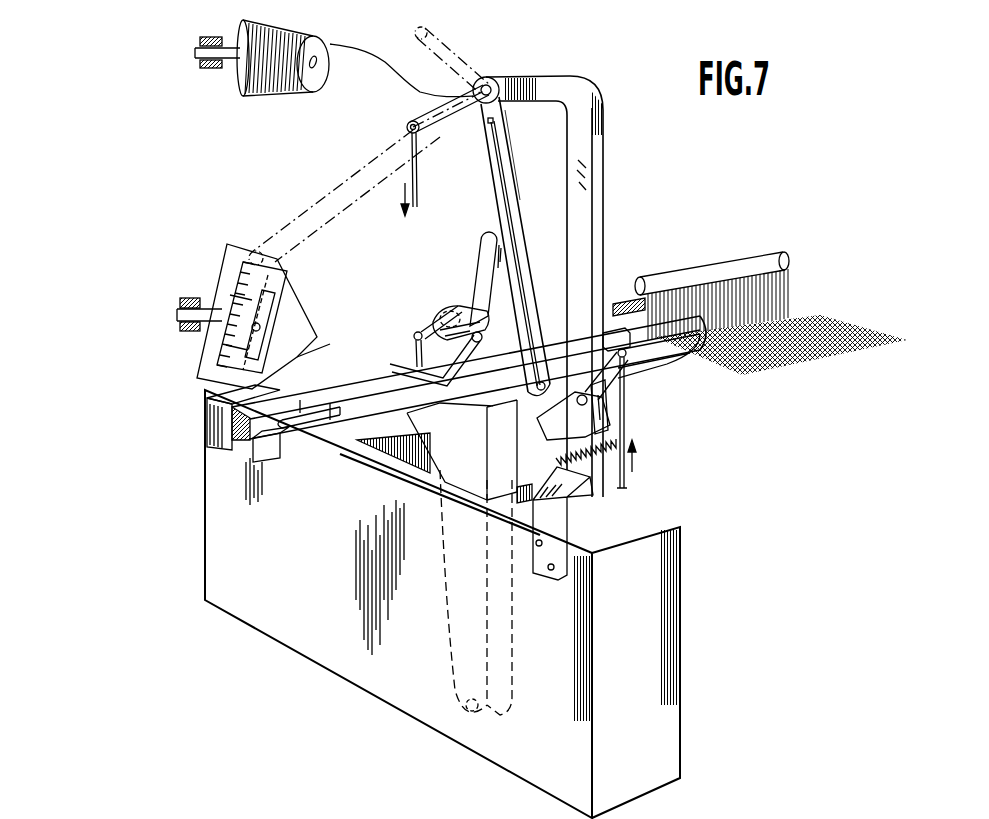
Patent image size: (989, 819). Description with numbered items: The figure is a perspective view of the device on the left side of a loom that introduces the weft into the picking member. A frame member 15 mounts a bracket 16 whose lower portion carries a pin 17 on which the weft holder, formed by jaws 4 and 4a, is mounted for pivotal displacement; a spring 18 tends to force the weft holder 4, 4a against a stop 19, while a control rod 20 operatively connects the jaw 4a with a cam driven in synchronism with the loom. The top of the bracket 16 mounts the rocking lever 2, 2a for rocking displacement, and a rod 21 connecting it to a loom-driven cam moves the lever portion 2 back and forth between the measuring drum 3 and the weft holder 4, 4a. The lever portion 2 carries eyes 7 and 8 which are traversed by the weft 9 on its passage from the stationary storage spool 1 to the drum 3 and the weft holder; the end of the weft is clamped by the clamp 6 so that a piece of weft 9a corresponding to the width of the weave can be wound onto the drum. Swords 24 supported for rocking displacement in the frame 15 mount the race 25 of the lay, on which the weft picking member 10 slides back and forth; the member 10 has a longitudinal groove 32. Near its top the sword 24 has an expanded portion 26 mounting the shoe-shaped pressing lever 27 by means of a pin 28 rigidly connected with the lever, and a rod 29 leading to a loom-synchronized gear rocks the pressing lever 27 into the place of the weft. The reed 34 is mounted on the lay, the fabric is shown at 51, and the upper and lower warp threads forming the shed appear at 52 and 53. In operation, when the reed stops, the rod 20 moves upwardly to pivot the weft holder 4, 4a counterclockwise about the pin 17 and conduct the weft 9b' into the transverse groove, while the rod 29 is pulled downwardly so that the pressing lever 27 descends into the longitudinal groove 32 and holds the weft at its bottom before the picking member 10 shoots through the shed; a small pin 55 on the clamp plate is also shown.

The storage spool 1 is at (262, 97).
The rocking lever portion 2 is at (528, 251).
The rocking lever portion 2a is at (411, 120).
The measuring drum 3 is at (205, 366).
The weft holder jaw 4 is at (564, 410).
The weft holder jaw 4a is at (633, 389).
The clamp 6 is at (233, 305).
The eye 7 is at (493, 122).
The eye 8 is at (540, 358).
The weft 9 is at (509, 200).
The piece of weft 9a is at (250, 351).
The weft 9b' is at (340, 340).
The weft picking member 10 is at (347, 438).
The frame member 15 is at (676, 541).
The bracket 16 is at (562, 92).
The pin 17 is at (618, 417).
The spring 18 is at (570, 523).
The stop 19 is at (632, 445).
The control rod 20 is at (628, 485).
The rod 21 is at (417, 199).
The sword 24 is at (478, 270).
The race 25 is at (227, 428).
The expanded portion 26 is at (463, 311).
The pressing lever 27 is at (397, 368).
The pin 28 is at (442, 307).
The rod 29 is at (415, 350).
The longitudinal groove 32 is at (353, 400).
The reed 34 is at (786, 268).
The fabric 51 is at (838, 320).
The upper warp threads 52 is at (620, 300).
The lower warp threads 53 is at (668, 360).
The pin 55 is at (259, 327).